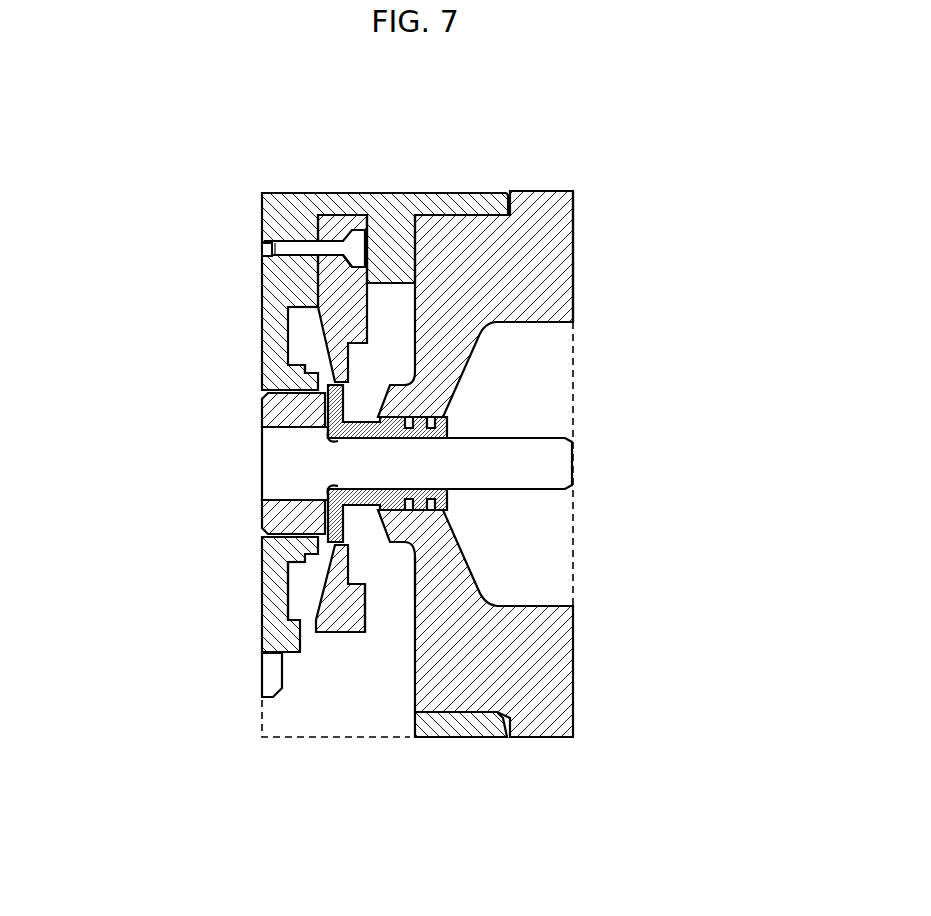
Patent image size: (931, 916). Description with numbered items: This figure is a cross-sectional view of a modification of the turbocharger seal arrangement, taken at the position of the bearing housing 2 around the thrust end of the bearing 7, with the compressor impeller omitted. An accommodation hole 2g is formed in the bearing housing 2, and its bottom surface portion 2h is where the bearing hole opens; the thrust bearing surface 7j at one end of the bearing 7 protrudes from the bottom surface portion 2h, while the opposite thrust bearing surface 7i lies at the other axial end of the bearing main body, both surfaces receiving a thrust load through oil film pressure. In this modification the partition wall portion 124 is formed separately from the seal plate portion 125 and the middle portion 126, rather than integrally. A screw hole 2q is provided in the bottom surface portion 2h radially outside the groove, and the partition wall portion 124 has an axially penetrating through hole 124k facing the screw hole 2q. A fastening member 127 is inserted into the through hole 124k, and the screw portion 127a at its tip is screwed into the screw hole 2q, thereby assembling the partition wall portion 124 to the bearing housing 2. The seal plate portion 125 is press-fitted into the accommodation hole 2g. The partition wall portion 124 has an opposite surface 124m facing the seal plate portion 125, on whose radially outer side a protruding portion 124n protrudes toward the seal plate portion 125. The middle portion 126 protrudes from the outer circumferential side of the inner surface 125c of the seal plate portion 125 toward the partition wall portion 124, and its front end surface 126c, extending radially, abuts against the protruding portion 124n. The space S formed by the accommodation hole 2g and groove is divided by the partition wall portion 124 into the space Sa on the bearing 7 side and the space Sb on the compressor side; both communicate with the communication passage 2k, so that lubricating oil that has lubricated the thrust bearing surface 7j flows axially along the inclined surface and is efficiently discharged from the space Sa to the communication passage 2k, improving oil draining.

The bearing housing 2 is at (513, 737).
The accommodation hole 2g is at (472, 202).
The bottom surface portion 2h is at (300, 369).
The communication passage 2k is at (342, 700).
The screw hole 2q is at (265, 247).
The bearing 7 is at (282, 398).
The thrust bearing surface 7i is at (300, 332).
The thrust bearing surface 7j is at (328, 491).
The partition wall portion 124 is at (337, 634).
The through hole 124k is at (300, 259).
The opposite surface 124m is at (352, 360).
The protruding portion 124n is at (348, 345).
The seal plate portion 125 is at (410, 674).
The inner surface 125c is at (405, 254).
The middle portion 126 is at (397, 283).
The front end surface 126c is at (345, 214).
The fastening member 127 is at (300, 282).
The screw portion 127a is at (286, 237).
The space S is at (305, 572).
The space Sa is at (308, 578).
The space Sb is at (382, 620).